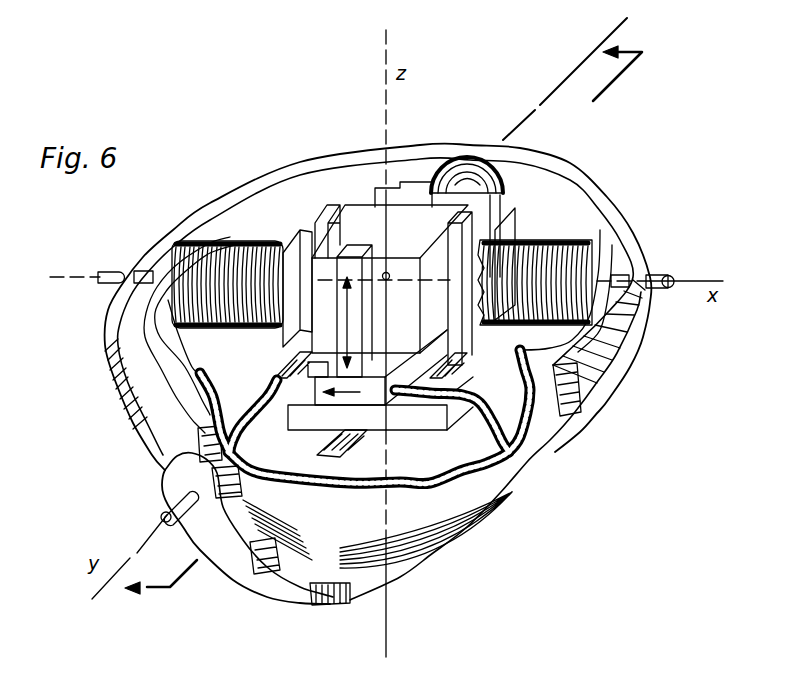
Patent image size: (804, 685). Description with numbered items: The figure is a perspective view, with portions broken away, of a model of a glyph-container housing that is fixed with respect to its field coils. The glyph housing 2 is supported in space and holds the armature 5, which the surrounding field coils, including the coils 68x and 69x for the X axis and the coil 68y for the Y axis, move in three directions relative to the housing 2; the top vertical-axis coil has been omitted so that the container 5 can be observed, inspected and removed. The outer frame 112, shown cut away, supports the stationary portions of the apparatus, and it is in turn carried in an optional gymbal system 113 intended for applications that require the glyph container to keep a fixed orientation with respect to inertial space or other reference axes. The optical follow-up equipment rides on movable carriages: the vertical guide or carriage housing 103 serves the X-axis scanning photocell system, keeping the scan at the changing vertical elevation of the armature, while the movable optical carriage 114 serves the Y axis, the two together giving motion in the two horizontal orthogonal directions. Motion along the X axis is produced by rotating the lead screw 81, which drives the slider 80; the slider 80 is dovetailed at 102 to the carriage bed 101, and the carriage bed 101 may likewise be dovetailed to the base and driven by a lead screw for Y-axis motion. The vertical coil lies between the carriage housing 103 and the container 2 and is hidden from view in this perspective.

The glyph housing 2 is at (392, 227).
The armature 5 is at (398, 311).
The x-axis pole piece 68x is at (518, 232).
The y-axis coil 68y is at (498, 192).
The x-axis pole plate 69x is at (304, 231).
The slider 80 is at (508, 490).
The lead screw 81 is at (505, 412).
The carriage bed 101 is at (457, 368).
The dovetail 102 is at (455, 377).
The vertical guide 103 is at (420, 415).
The outer frame 112 is at (278, 183).
The gymbal system 113 is at (160, 480).
The movable optical carriage 114 is at (358, 390).